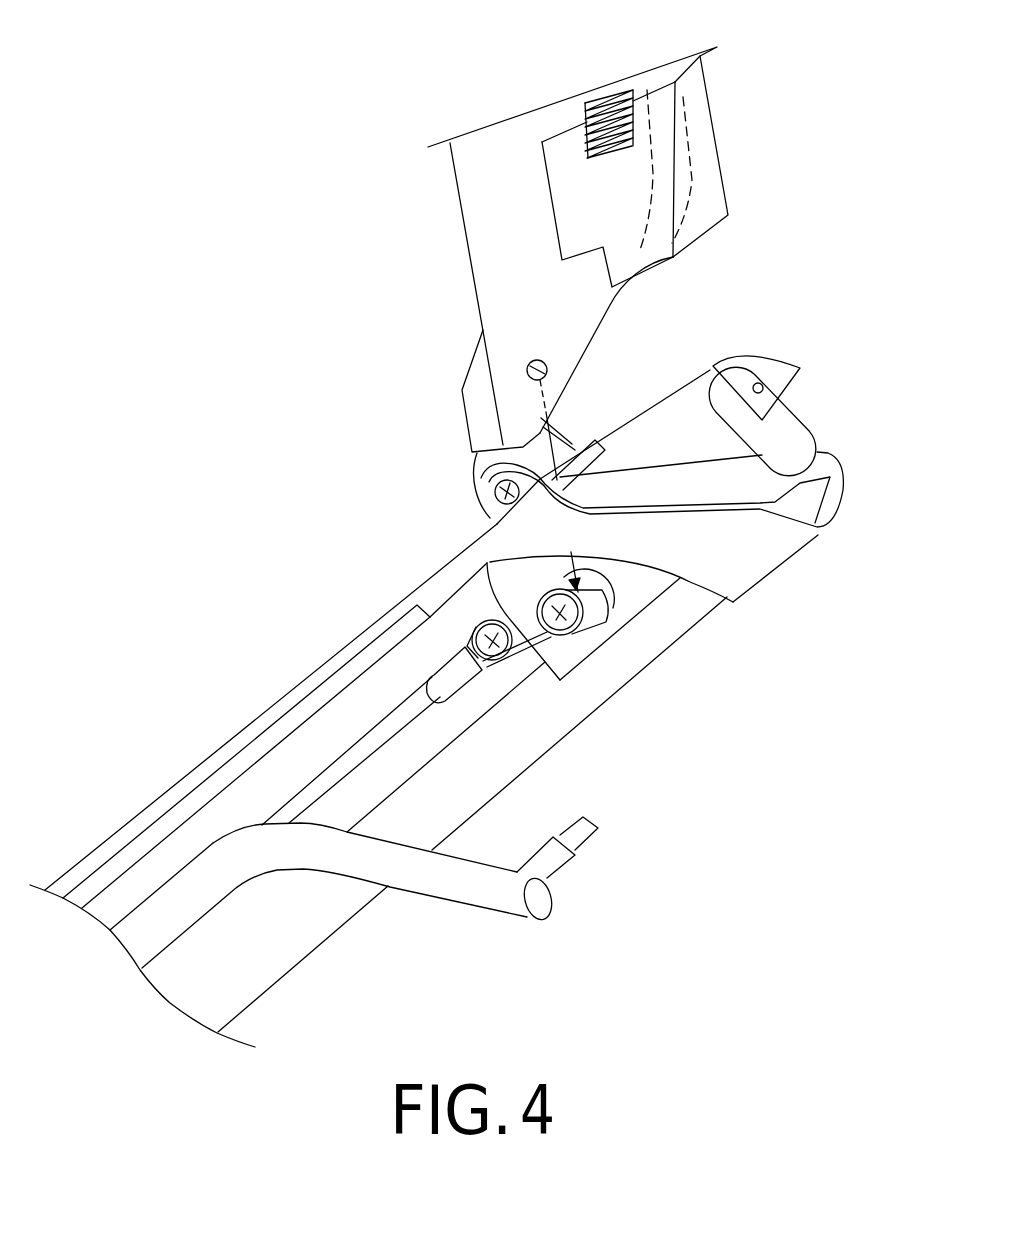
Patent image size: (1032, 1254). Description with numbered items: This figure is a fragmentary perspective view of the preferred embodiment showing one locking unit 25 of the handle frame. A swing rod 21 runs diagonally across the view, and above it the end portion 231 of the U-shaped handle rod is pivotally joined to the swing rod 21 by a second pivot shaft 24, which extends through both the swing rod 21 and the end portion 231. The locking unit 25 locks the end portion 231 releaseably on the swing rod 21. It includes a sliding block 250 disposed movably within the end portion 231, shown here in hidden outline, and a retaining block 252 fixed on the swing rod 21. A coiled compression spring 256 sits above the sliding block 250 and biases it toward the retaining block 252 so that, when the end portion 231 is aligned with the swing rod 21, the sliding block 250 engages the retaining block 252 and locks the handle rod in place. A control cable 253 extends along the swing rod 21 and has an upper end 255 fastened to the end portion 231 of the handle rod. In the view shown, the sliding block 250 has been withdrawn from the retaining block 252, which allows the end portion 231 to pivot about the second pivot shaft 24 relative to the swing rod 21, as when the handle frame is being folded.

The swing rod 21 is at (617, 658).
The second pivot shaft 24 is at (500, 490).
The locking unit 25 is at (705, 460).
The end portion 231 is at (474, 264).
The sliding block 250 is at (547, 140).
The retaining block 252 is at (767, 365).
The control cable 253 is at (593, 565).
The upper end 255 is at (549, 400).
The coiled compression spring 256 is at (583, 97).